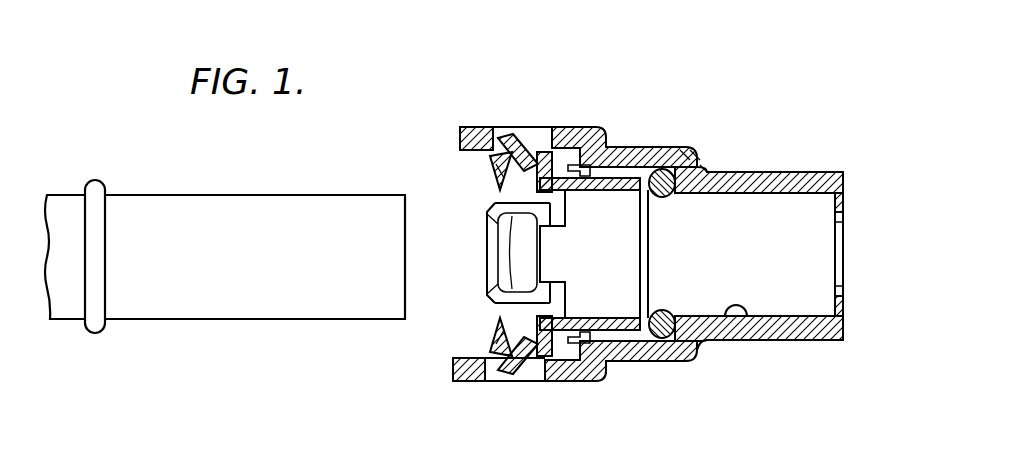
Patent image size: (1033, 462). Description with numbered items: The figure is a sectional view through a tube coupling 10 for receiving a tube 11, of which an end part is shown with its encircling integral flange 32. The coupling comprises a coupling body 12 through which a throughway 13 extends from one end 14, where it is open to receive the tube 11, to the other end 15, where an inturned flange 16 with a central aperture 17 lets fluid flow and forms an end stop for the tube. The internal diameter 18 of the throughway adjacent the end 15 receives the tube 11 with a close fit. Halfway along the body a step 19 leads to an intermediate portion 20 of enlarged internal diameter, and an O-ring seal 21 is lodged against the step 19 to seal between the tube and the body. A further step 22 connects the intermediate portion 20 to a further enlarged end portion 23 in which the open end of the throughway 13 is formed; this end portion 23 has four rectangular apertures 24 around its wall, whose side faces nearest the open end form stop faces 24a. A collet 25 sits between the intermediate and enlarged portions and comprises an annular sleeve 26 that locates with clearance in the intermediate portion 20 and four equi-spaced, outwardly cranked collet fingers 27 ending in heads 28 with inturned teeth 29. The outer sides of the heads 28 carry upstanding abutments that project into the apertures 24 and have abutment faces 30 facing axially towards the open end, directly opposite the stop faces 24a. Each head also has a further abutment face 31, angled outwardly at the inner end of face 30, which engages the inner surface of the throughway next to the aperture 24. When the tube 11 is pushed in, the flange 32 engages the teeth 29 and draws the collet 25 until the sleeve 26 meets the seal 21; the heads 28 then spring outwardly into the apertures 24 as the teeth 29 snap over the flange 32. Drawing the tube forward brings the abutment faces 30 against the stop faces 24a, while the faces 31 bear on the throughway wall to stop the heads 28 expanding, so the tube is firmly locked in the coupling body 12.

The tube coupling 10 is at (644, 71).
The tube 11 is at (236, 335).
The coupling body 12 is at (810, 332).
The throughway 13 is at (768, 196).
The one end of the coupling body 14 is at (455, 368).
The other end of the coupling body 15 is at (845, 177).
The inturned flange 16 is at (845, 213).
The central aperture 17 is at (845, 262).
The internal diameter of the throughway 18 is at (741, 318).
The step 19 is at (688, 342).
The intermediate portion 20 is at (623, 360).
The O-ring seal 21 is at (694, 170).
The step 22 is at (588, 368).
The enlarged end portion 23 is at (468, 381).
The rectangular apertures 24 is at (538, 127).
The stop faces 24a is at (500, 127).
The collet 25 is at (544, 249).
The annular sleeve 26 is at (661, 168).
The collet fingers 27 is at (584, 160).
The heads 28 is at (492, 161).
The inturned teeth 29 is at (493, 180).
The abutment faces 30 is at (505, 370).
The further abutment face 31 is at (488, 346).
The encircling integral flange 32 is at (92, 181).